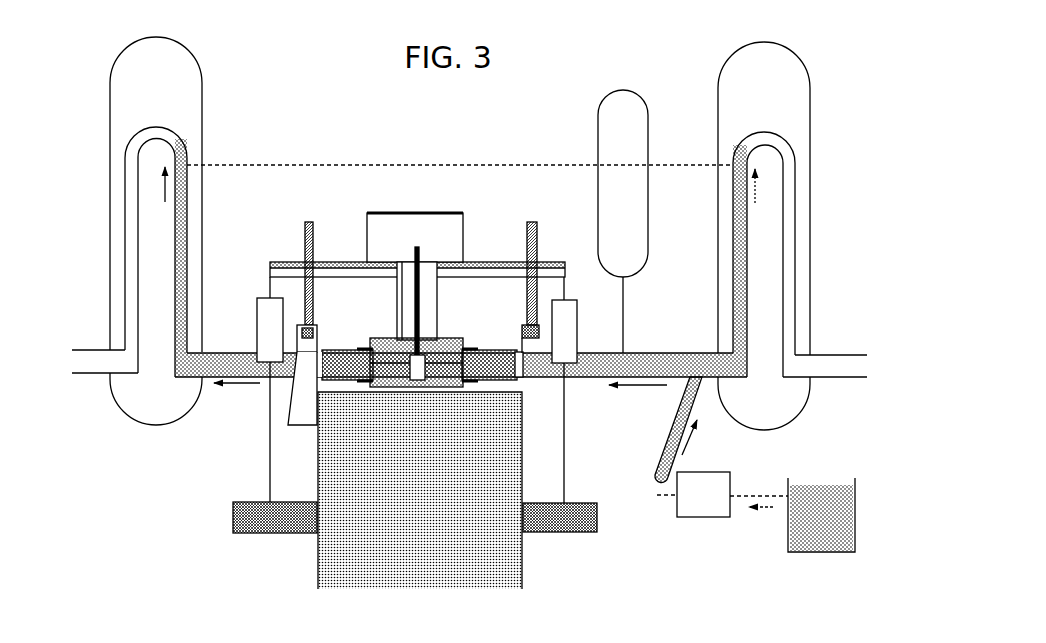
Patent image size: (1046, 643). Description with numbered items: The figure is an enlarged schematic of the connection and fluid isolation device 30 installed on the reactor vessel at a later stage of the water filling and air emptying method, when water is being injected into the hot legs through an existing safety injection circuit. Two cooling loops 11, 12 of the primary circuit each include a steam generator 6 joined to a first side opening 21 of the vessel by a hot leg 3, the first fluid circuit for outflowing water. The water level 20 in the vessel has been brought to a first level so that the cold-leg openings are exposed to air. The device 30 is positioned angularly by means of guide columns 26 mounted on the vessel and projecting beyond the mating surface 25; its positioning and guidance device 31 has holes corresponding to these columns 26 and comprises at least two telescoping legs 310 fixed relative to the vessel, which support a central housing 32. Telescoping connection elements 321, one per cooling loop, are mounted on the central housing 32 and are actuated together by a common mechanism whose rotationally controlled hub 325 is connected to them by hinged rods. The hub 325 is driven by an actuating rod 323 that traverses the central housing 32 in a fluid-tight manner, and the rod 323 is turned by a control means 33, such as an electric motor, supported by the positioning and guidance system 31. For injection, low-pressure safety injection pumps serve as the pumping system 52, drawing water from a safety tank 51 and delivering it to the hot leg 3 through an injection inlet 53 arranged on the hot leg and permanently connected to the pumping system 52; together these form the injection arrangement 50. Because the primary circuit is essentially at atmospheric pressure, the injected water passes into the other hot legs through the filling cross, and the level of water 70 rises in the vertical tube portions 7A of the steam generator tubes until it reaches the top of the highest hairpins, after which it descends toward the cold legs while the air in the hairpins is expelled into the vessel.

The hot leg 3 is at (228, 352).
The steam generator 6 is at (215, 90).
The vertical tube portion 7A is at (185, 257).
The level of water 70 is at (265, 163).
The cooling loop 11 is at (92, 342).
The cooling loop 12 is at (830, 343).
The telescoping leg 310 is at (263, 437).
The water level 20 is at (350, 393).
The connection and fluid isolation device 30 is at (423, 183).
The control means 33 is at (437, 213).
The central housing 32 is at (387, 338).
The actuating rod 323 is at (414, 285).
The hub 325 is at (418, 370).
The first side opening 21 is at (322, 350).
The telescoping connection element 321 is at (490, 368).
The guide column 26 is at (308, 245).
The mating surface 25 is at (295, 383).
The positioning and guidance device 31 is at (553, 262).
The control system 50 is at (734, 491).
The injection inlet 53 is at (678, 412).
The pumping system 52 is at (707, 517).
The safety tank 51 is at (825, 478).